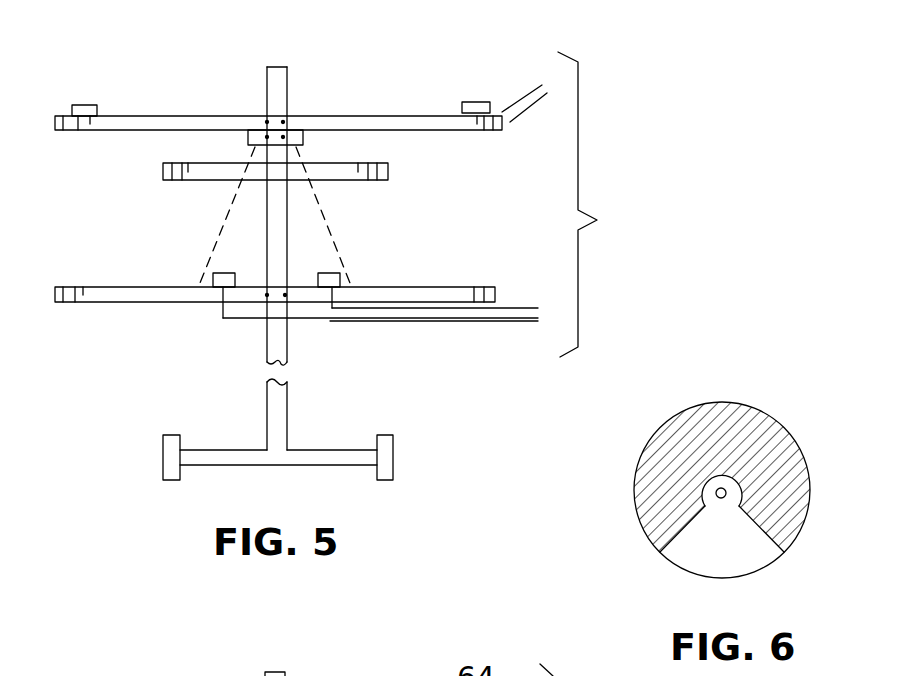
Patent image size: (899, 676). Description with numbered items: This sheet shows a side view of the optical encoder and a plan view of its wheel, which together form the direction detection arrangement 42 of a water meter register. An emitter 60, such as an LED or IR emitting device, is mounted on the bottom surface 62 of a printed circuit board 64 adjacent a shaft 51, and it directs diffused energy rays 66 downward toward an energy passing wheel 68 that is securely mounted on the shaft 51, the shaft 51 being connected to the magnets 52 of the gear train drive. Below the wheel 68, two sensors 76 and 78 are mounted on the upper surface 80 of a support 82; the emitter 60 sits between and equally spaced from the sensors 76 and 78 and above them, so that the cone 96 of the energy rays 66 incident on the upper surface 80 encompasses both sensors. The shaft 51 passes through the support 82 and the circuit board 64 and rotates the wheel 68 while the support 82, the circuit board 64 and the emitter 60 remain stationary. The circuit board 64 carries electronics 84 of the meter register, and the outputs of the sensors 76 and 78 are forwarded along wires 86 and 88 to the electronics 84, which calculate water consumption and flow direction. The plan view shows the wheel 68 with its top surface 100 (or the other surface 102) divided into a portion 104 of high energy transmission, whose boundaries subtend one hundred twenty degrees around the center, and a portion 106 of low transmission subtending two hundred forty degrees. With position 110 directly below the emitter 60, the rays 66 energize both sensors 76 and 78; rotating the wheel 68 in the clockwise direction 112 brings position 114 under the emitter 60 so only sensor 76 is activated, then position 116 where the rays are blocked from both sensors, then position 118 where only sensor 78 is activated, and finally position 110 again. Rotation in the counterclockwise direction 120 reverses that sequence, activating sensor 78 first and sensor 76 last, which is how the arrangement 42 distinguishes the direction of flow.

In FIG. 5, the direction detection arrangement 42 is at (599, 204).
In FIG. 5, the shaft 51 is at (267, 347).
In FIG. 5, the magnets 52 is at (163, 463).
In FIG. 5, the emitter 60 is at (302, 145).
In FIG. 5, the bottom surface 62 is at (458, 131).
In FIG. 5, the printed circuit board 64 is at (175, 88).
In FIG. 5, the energy rays 66 is at (222, 224).
In FIG. 5, the energy passing wheel 68 is at (232, 192).
In FIG. 6, the energy passing wheel 68 is at (804, 432).
In FIG. 5, the sensor 76 is at (225, 273).
In FIG. 5, the sensor 78 is at (340, 276).
In FIG. 5, the upper surface 80 is at (480, 287).
In FIG. 5, the support 82 is at (99, 311).
In FIG. 5, the electronics 84 is at (81, 104).
In FIG. 5, the wire 86 is at (518, 102).
In FIG. 5, the wire 88 is at (522, 104).
In FIG. 5, the cone 96 is at (197, 286).
In FIG. 5, the top surface 100 is at (172, 166).
In FIG. 6, the top surface 100 is at (673, 430).
In FIG. 5, the surface 102 is at (372, 181).
In FIG. 6, the portion of high transmission 104 is at (683, 560).
In FIG. 6, the portion of low transmission 106 is at (727, 430).
In FIG. 6, the position 110 is at (728, 578).
In FIG. 6, the clockwise direction 112 is at (850, 556).
In FIG. 6, the position 114 is at (783, 478).
In FIG. 6, the position 116 is at (723, 463).
In FIG. 6, the position 118 is at (640, 452).
In FIG. 6, the counterclockwise direction 120 is at (611, 546).